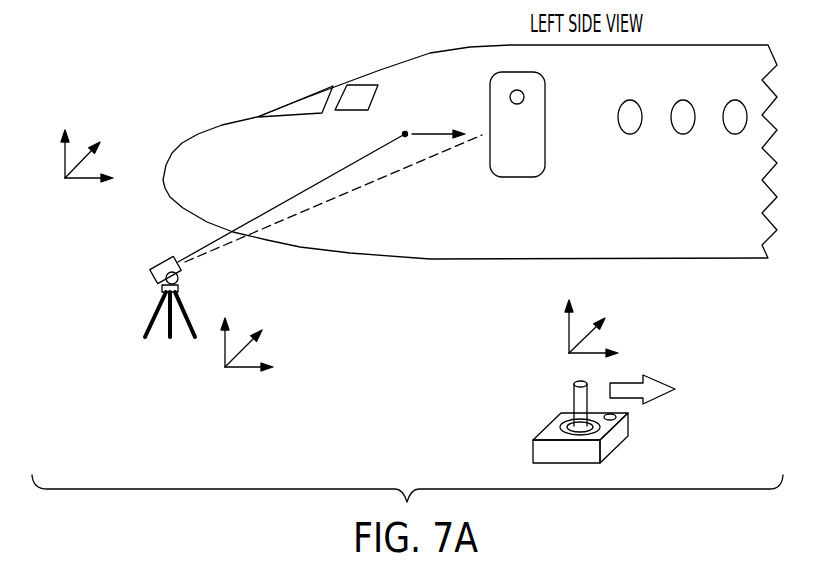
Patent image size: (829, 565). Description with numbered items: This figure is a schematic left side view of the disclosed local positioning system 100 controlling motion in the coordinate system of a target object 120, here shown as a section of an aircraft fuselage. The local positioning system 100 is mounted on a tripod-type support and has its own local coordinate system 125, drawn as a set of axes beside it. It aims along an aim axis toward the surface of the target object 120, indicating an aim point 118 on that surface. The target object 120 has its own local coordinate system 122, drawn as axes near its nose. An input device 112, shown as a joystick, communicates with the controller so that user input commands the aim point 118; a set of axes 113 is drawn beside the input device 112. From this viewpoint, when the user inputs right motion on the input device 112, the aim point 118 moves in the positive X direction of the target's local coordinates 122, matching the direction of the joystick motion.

The local positioning system 100 is at (111, 296).
The input device 112 is at (552, 423).
The joystick coordinate system 113 is at (569, 353).
The aim point 118 is at (405, 134).
The target object 120 is at (725, 53).
The local coordinate system of the target object 122 is at (65, 179).
The local coordinate system of the local positioning system 125 is at (225, 368).